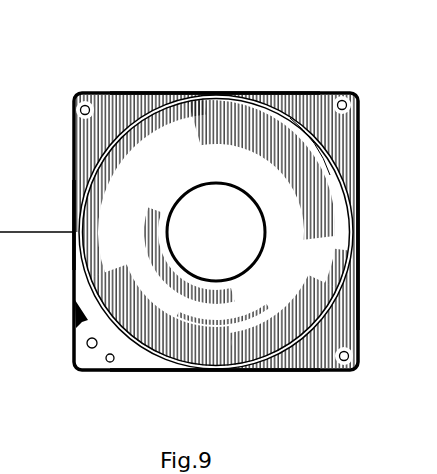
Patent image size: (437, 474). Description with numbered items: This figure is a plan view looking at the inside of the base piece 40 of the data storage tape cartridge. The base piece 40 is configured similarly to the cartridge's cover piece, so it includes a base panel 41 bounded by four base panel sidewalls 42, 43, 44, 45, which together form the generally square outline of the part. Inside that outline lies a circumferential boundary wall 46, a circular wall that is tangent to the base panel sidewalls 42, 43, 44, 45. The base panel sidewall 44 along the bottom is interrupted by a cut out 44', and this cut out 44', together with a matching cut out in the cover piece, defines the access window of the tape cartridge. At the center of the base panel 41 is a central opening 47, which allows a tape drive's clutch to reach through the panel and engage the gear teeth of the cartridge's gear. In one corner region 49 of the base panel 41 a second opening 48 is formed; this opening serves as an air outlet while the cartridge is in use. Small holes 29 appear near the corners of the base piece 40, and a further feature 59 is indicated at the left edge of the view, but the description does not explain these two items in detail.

The mounting holes 29 is at (80, 111).
The base piece 40 is at (330, 382).
The base panel 41 is at (172, 200).
The base panel sidewall 42 is at (213, 93).
The base panel sidewall 43 is at (358, 232).
The base panel sidewall 44 is at (163, 391).
The cut out 44' is at (268, 387).
The base panel sidewall 45 is at (74, 222).
The circumferential boundary wall 46 is at (308, 130).
The central opening 47 is at (230, 239).
The second opening 48 is at (87, 345).
The corner region 49 is at (74, 300).
The adjacent element 59 is at (8, 301).